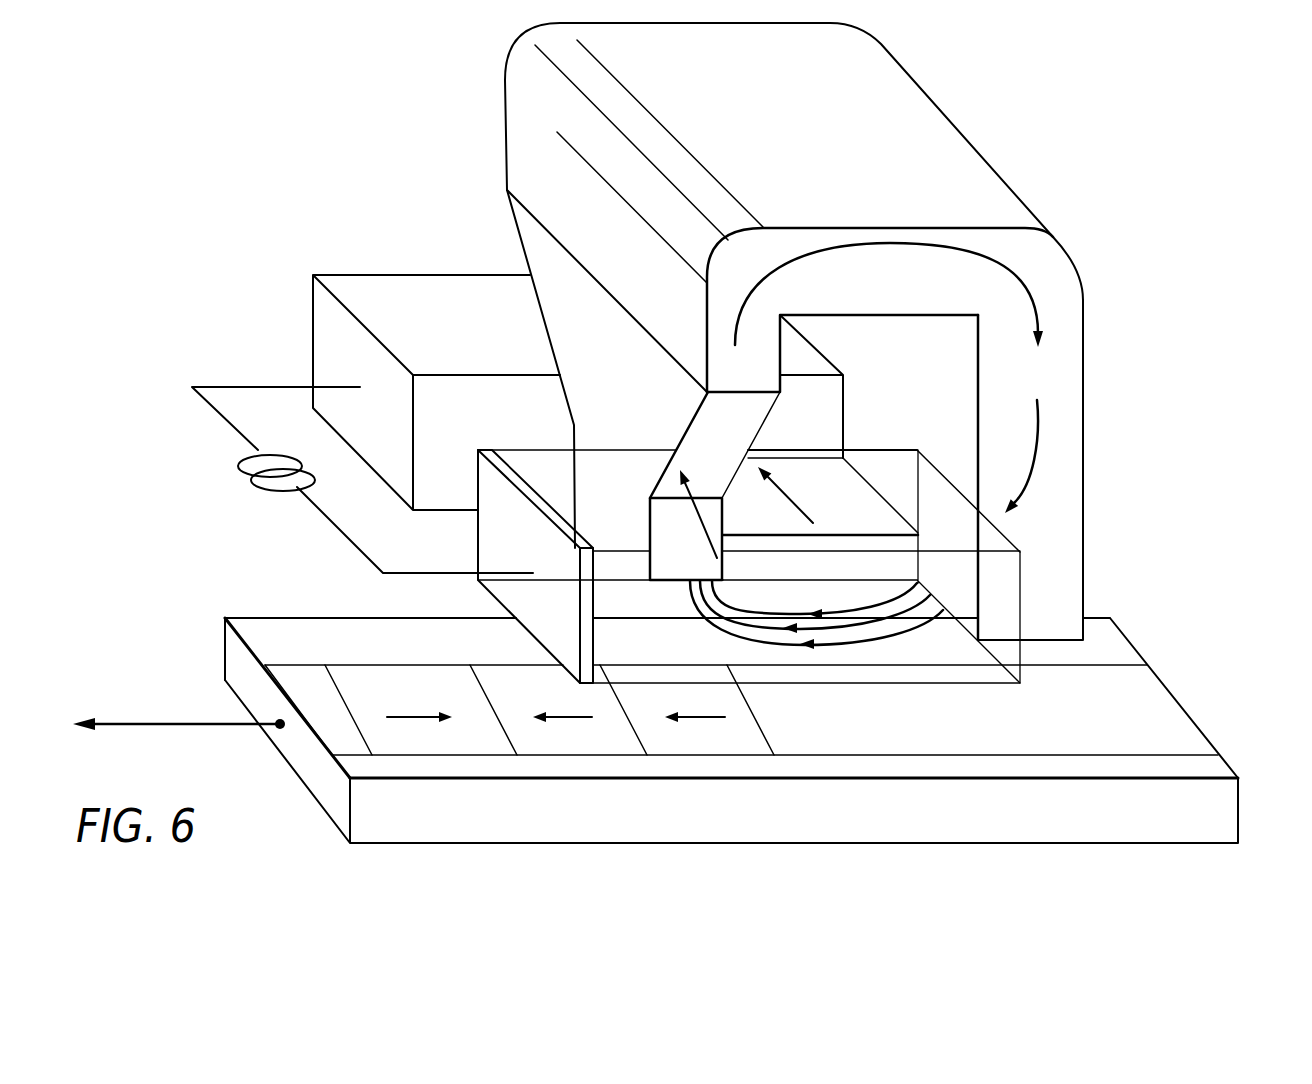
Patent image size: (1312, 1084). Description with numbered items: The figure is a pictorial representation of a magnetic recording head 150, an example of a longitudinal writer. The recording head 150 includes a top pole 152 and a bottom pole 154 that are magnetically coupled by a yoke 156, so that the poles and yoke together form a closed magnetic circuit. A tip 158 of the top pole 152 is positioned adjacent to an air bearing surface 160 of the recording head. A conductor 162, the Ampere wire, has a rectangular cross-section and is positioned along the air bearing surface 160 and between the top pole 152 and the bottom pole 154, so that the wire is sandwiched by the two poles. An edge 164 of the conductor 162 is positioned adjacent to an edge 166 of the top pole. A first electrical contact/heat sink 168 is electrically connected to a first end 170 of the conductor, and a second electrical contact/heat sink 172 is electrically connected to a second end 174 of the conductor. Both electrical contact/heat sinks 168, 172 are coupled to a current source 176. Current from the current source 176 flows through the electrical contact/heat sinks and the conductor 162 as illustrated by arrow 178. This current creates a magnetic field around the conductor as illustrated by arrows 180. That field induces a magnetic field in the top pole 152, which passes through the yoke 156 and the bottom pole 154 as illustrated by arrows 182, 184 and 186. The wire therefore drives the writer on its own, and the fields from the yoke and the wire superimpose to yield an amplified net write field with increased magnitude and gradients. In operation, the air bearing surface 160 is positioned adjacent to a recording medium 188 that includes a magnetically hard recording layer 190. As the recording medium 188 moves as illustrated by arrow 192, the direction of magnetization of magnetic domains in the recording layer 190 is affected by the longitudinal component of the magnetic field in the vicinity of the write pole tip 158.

The magnetic recording head 150 is at (1092, 185).
The top pole 152 is at (643, 417).
The bottom pole 154 is at (1074, 483).
The yoke 156 is at (897, 102).
The tip of the top pole 158 is at (592, 532).
The air bearing surface 160 is at (627, 562).
The conductor 162 is at (843, 485).
The edge of the conductor 164 is at (723, 572).
The edge of the top pole 166 is at (722, 575).
The first electrical contact/heat sink 168 is at (417, 292).
The first end of the conductor 170 is at (818, 453).
The second electrical contact/heat sink 172 is at (908, 673).
The second end of the conductor 174 is at (910, 568).
The current source 176 is at (253, 490).
The arrow 178 is at (815, 522).
The arrows 180 is at (827, 662).
The arrow 182 is at (683, 527).
The arrow 184 is at (883, 243).
The arrow 186 is at (1033, 447).
The recording medium 188 is at (1212, 695).
The magnetically hard recording layer 190 is at (1220, 807).
The arrow 192 is at (177, 727).